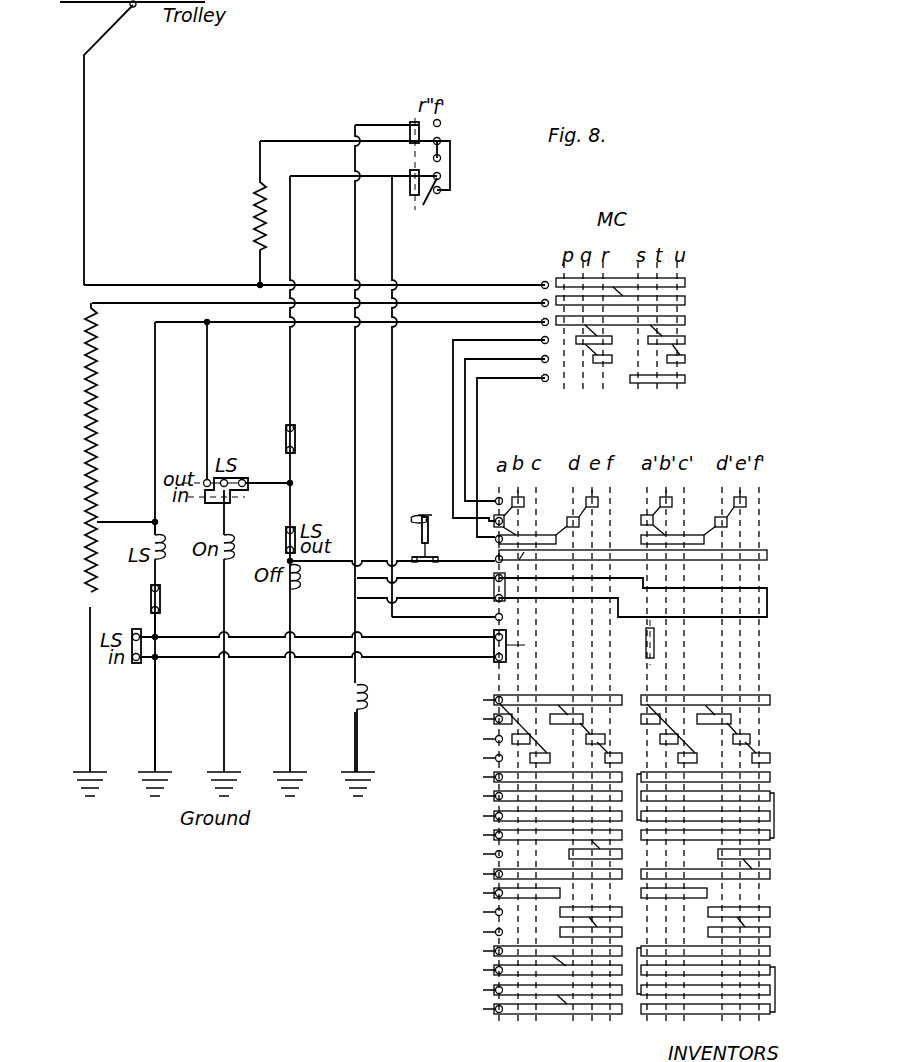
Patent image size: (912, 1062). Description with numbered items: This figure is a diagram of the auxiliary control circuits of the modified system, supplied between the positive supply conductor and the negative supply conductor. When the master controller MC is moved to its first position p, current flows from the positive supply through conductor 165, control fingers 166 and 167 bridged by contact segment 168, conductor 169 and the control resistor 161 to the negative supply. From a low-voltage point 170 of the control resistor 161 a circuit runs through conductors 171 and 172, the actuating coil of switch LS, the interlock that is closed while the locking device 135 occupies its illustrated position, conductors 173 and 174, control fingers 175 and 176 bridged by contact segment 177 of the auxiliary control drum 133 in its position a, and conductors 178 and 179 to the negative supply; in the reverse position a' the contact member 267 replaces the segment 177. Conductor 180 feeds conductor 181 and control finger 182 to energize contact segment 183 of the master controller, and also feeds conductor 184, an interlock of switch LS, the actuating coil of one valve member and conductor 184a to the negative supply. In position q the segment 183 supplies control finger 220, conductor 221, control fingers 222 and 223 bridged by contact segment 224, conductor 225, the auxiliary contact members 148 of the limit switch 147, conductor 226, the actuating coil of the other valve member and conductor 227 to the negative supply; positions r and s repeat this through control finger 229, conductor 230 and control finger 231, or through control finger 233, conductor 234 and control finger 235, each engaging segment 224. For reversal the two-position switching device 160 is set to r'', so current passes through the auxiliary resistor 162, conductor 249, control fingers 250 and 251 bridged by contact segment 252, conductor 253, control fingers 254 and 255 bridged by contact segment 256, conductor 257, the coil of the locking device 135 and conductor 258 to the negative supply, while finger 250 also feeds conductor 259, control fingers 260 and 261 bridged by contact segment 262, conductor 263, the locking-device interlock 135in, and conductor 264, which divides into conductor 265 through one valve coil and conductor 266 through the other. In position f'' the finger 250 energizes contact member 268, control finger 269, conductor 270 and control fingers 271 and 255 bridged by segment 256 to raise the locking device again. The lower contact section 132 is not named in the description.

The main controller contact bank 132 is at (648, 854).
The auxiliary section of the control device 133 is at (656, 754).
The locking device 135 is at (355, 696).
The interlock of the locking device 135in is at (295, 440).
The limit switch 147 is at (438, 533).
The auxiliary contact members 148 is at (428, 571).
The two-position switching device 160 is at (431, 139).
The control resistor 161 is at (85, 447).
The auxiliary resistor 162 is at (254, 219).
The conductor 165 is at (155, 288).
The control finger 166 is at (542, 285).
The control finger 167 is at (542, 303).
The contact segment 168 is at (686, 284).
The conductor 169 is at (446, 310).
The low-voltage point 170 is at (104, 524).
The conductor 171 is at (130, 530).
The conductor 172 is at (155, 533).
The conductor 173 is at (155, 626).
The conductor 174 is at (190, 640).
The control finger 175 is at (494, 647).
The control finger 176 is at (494, 660).
The contact segment 177 is at (525, 645).
The conductor 178 is at (433, 661).
The conductor 179 is at (155, 713).
The conductor 180 is at (155, 456).
The conductor 181 is at (258, 328).
The control finger 182 is at (542, 322).
The contact segment 183 is at (622, 340).
The conductor 184 is at (208, 386).
The conductor 184a is at (224, 611).
The control finger 220 is at (542, 340).
The conductor 221 is at (484, 340).
The control finger 222 is at (496, 519).
The control finger 223 is at (496, 559).
The contact segment 224 is at (608, 558).
The conductor 225 is at (485, 562).
The conductor 226 is at (344, 563).
The conductor 227 is at (290, 618).
The control finger 229 is at (542, 359).
The conductor 230 is at (484, 359).
The control finger 231 is at (498, 497).
The control finger 233 is at (542, 378).
The conductor 234 is at (484, 378).
The control finger 235 is at (495, 539).
The conductor 249 is at (318, 141).
The control finger 250 is at (441, 144).
The control finger 251 is at (441, 125).
The contact segment 252 is at (410, 140).
The conductor 253 is at (376, 125).
The control finger 254 is at (494, 590).
The control finger 255 is at (497, 600).
The contact segment 256 is at (633, 593).
The conductor 257 is at (402, 604).
The conductor 258 is at (357, 738).
The conductor 259 is at (441, 183).
The control finger 260 is at (437, 194).
The control finger 261 is at (418, 201).
The contact segment 262 is at (410, 188).
The conductor 263 is at (291, 234).
The conductor 264 is at (294, 465).
The conductor 265 is at (268, 480).
The conductor 266 is at (292, 515).
The contact member 267 is at (646, 654).
The contact member 268 is at (430, 153).
The control finger 269 is at (441, 160).
The conductor 270 is at (392, 256).
The control finger 271 is at (496, 619).